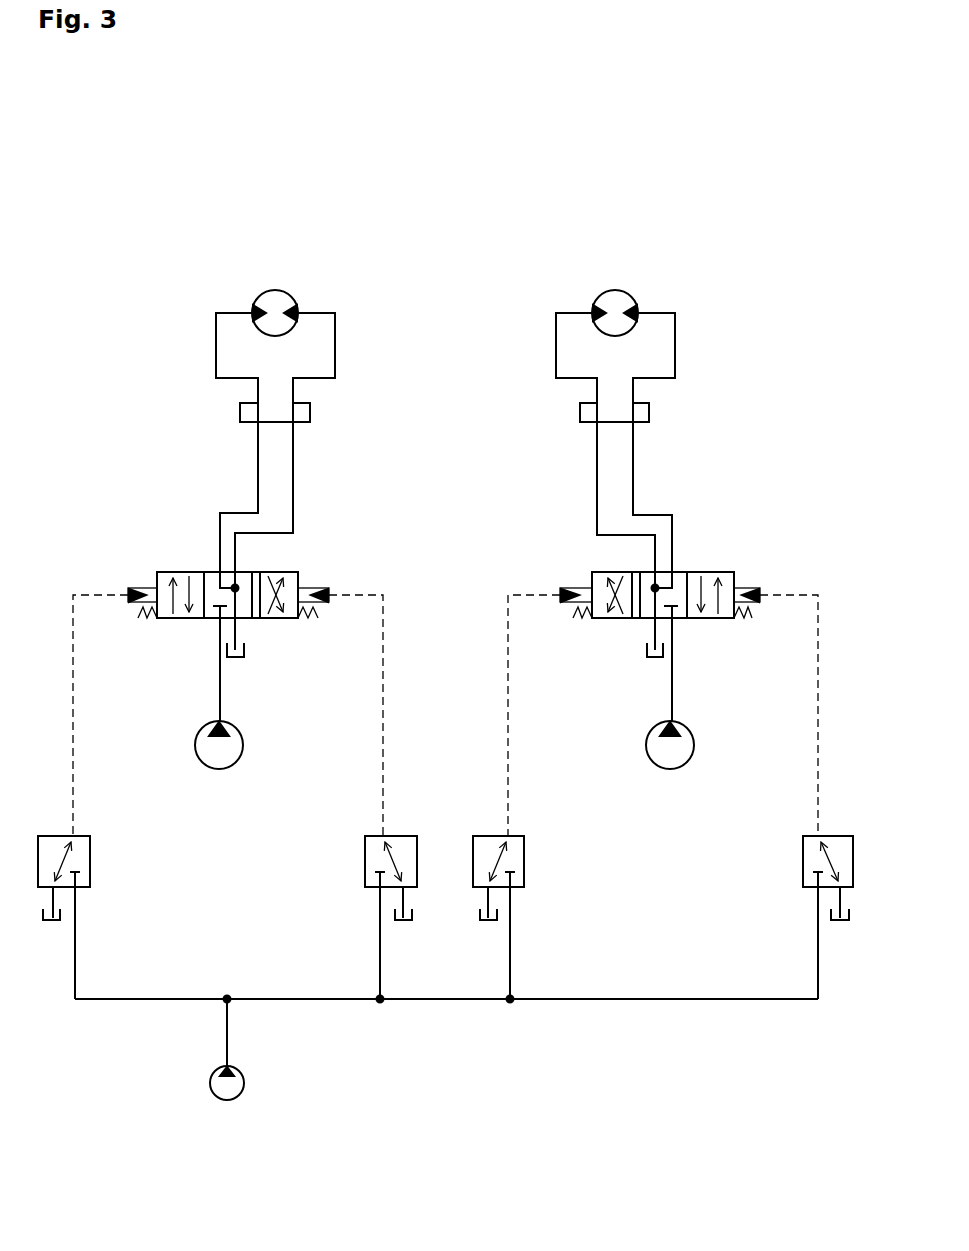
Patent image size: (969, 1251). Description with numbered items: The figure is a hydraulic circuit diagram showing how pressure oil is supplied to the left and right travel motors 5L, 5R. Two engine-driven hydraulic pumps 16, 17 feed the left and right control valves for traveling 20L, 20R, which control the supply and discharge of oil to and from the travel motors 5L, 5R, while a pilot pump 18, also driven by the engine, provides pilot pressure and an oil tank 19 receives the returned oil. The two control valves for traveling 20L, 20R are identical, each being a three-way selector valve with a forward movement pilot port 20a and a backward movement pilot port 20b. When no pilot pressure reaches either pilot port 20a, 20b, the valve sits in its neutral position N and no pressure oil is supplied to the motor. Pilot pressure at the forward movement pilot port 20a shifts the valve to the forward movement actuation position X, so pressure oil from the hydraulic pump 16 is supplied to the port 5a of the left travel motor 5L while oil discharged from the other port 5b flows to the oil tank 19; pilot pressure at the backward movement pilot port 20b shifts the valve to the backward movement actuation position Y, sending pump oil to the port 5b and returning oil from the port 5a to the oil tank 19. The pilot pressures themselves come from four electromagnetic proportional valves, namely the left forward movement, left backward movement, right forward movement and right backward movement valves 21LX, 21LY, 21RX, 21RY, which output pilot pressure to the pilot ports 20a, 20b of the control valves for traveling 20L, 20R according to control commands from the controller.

The left travel motor 5L is at (277, 292).
The right travel motor 5R is at (617, 292).
The port 5a is at (252, 312).
The port 5b is at (298, 312).
The left control valve for traveling 20L is at (193, 566).
The right control valve for traveling 20R is at (699, 568).
The forward movement pilot port 20a is at (128, 590).
The backward movement pilot port 20b is at (329, 590).
The forward movement actuation position X is at (182, 620).
The neutral position N is at (213, 620).
The backward movement actuation position Y is at (260, 620).
The hydraulic pump 16 is at (243, 748).
The hydraulic pump 17 is at (694, 748).
The pilot pump 18 is at (227, 1100).
The oil tank 19 is at (230, 658).
The left forward movement electromagnetic proportional valve 21LX is at (90, 858).
The left backward movement electromagnetic proportional valve 21LY is at (365, 860).
The right backward movement electromagnetic proportional valve 21RY is at (524, 858).
The right forward movement electromagnetic proportional valve 21RX is at (803, 860).